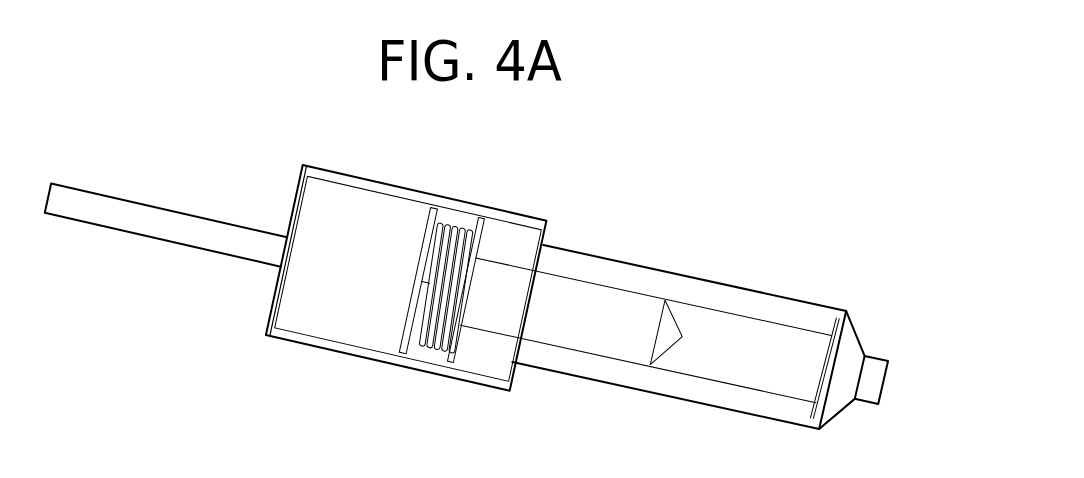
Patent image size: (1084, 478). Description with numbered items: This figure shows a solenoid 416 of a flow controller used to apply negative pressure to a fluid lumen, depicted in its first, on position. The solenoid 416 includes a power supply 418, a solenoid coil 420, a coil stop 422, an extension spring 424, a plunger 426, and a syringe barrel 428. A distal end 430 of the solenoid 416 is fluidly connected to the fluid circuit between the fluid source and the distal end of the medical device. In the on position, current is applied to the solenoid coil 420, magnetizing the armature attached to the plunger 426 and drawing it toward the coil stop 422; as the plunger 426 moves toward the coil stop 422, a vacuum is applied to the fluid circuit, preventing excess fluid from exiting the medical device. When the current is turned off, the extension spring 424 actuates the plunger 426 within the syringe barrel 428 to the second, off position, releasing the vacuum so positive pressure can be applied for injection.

The solenoid 416 is at (722, 195).
The power supply 418 is at (154, 204).
The solenoid coil 420 is at (367, 213).
The coil stop 422 is at (270, 300).
The extension spring 424 is at (455, 229).
The plunger 426 is at (583, 335).
The syringe barrel 428 is at (780, 310).
The distal end 430 is at (887, 380).